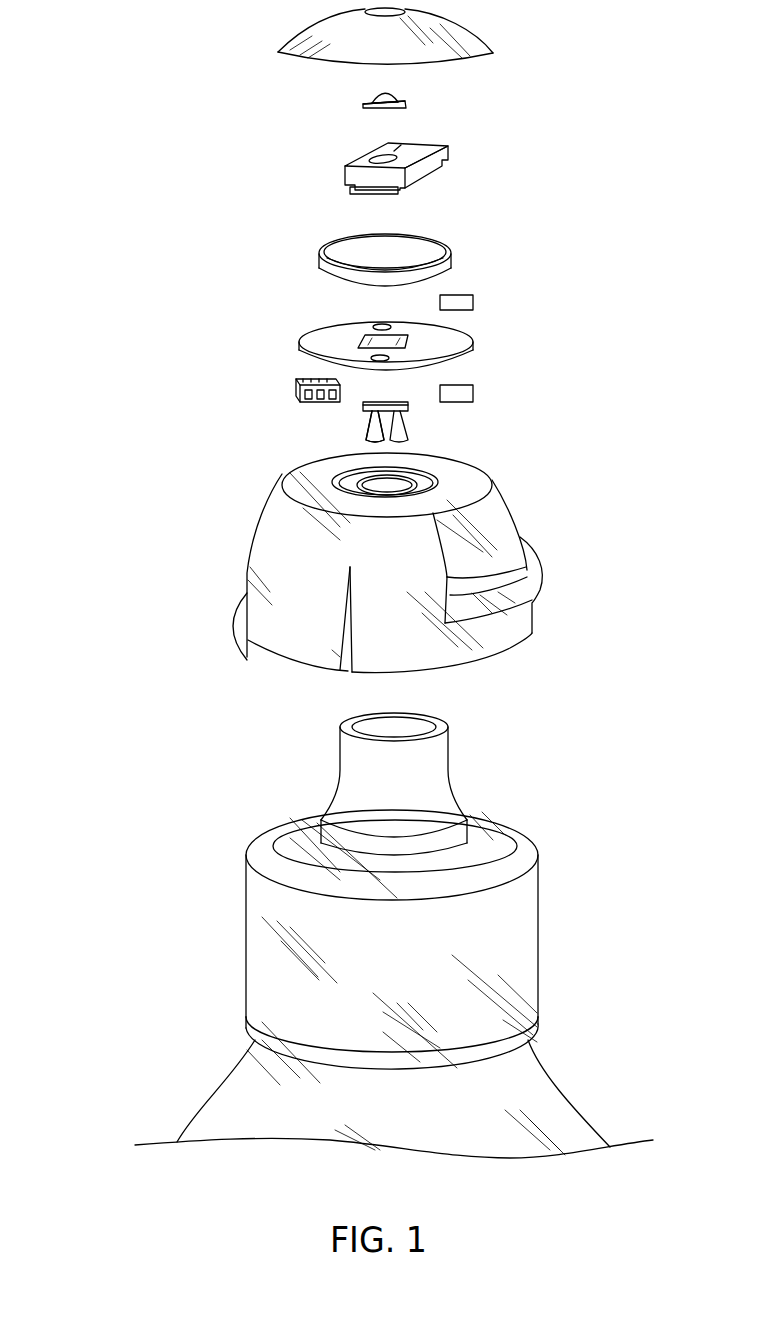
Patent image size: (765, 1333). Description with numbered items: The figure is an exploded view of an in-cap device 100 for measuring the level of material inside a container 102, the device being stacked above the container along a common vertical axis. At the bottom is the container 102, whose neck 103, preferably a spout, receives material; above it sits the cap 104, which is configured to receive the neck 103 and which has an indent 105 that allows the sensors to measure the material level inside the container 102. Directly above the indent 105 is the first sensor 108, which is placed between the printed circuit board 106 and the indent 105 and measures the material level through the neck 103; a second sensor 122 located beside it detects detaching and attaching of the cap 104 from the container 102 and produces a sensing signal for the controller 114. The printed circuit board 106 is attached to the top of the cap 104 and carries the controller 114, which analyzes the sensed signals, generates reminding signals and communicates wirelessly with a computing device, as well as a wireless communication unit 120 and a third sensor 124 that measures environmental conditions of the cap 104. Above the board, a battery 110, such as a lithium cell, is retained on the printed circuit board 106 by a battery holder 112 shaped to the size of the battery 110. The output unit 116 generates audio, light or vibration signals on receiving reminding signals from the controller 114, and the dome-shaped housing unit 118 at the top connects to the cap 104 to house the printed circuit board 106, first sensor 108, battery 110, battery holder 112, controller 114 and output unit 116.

The in-cap device 100 is at (150, 480).
The container 102 is at (545, 1087).
The neck 103 is at (433, 775).
The cap 104 is at (525, 622).
The indent 105 is at (392, 483).
The printed circuit board 106 is at (474, 345).
The first sensor 108 is at (405, 427).
The battery 110 is at (452, 257).
The battery holder 112 is at (450, 152).
The controller 114 is at (296, 392).
The output unit 116 is at (407, 105).
The housing unit 118 is at (494, 46).
The wireless communication unit 120 is at (474, 393).
The second sensor 122 is at (367, 430).
The third sensor 124 is at (474, 302).